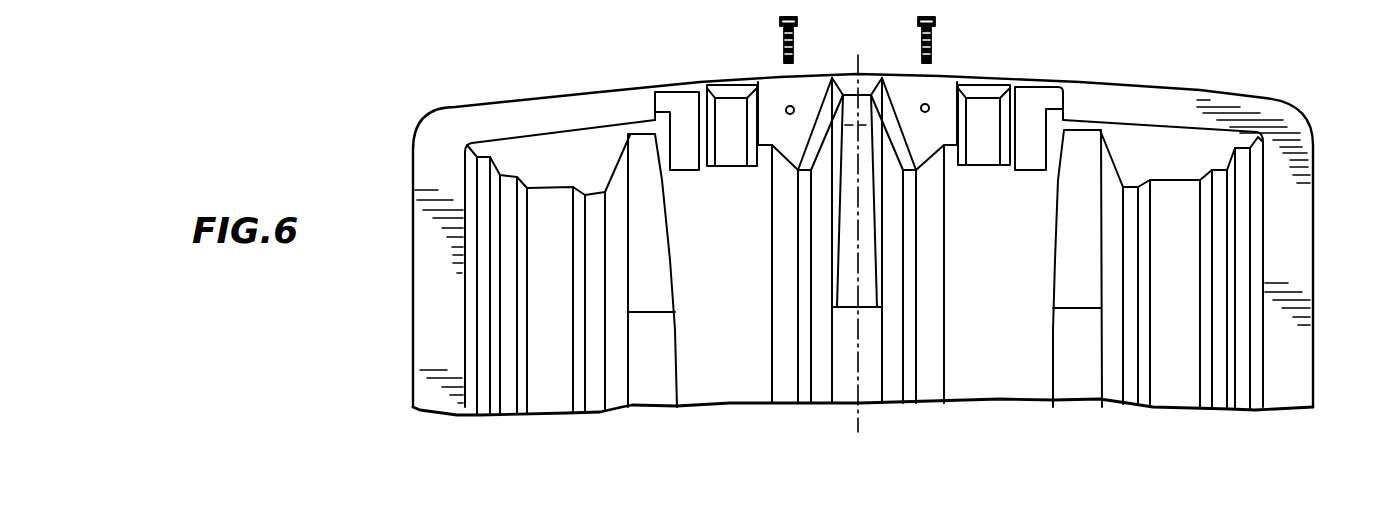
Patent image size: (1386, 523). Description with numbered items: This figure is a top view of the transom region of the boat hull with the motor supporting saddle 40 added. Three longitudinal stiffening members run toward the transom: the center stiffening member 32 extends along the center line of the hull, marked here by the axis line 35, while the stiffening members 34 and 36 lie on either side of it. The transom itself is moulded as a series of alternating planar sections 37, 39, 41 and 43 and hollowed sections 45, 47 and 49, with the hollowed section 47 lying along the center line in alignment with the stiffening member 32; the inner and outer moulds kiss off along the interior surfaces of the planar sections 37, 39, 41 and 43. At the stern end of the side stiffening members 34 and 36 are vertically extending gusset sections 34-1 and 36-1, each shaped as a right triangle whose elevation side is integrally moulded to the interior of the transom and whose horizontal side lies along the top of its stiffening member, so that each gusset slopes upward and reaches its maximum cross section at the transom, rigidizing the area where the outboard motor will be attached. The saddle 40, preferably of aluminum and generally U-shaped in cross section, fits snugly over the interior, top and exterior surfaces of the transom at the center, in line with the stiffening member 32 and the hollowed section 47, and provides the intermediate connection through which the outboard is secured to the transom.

The longitudinal stiffening member 32 is at (873, 370).
The longitudinal stiffening member 34 is at (652, 385).
The gusset section 34-1 is at (648, 275).
The center axis line 35 is at (860, 413).
The longitudinal stiffening member 36 is at (1085, 357).
The gusset section 36-1 is at (1080, 233).
The planar section 37 is at (685, 117).
The planar section 39 is at (802, 82).
The saddle 40 is at (845, 215).
The planar section 41 is at (938, 76).
The planar section 43 is at (1040, 87).
The hollowed section 45 is at (732, 90).
The hollowed section 47 is at (862, 82).
The hollowed section 49 is at (998, 84).